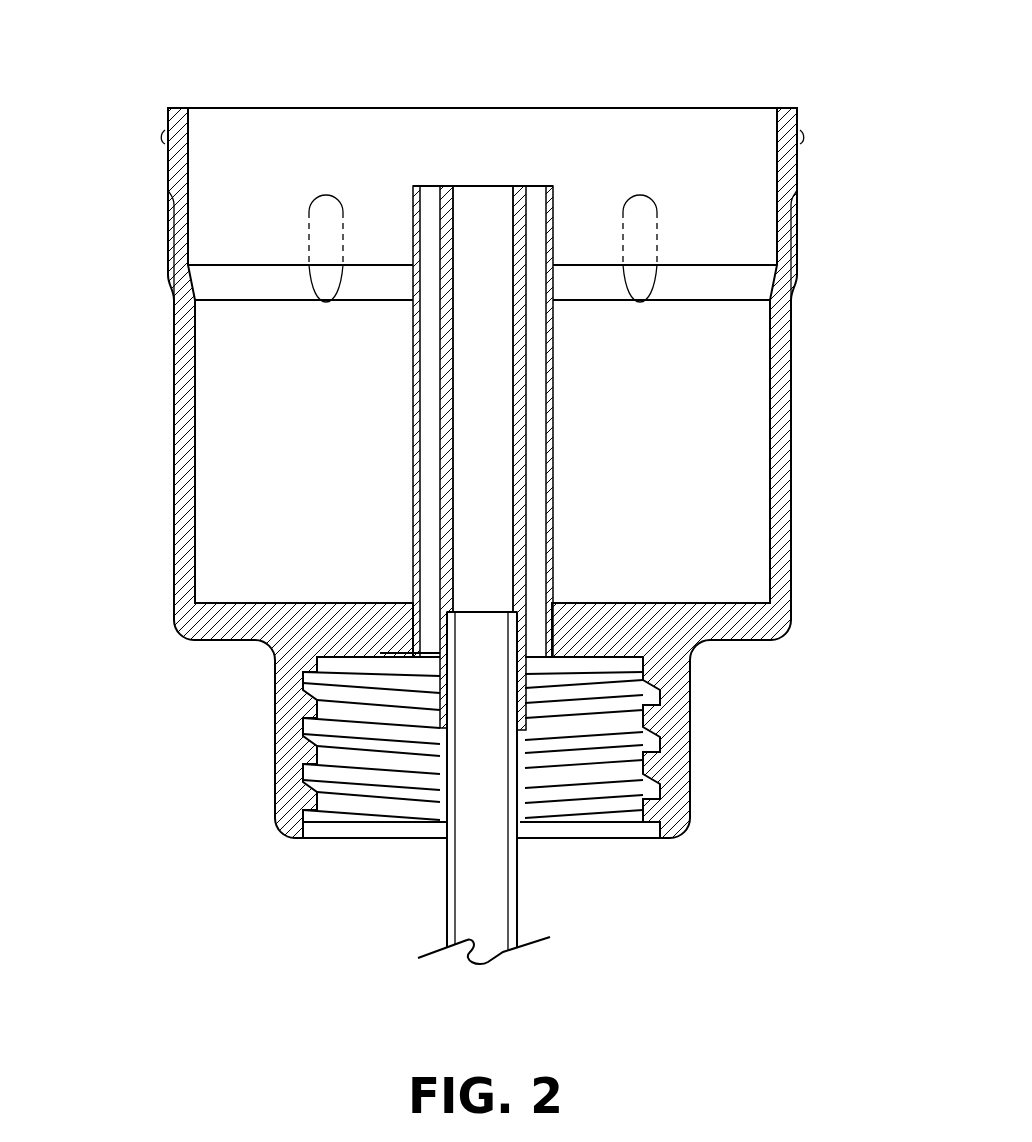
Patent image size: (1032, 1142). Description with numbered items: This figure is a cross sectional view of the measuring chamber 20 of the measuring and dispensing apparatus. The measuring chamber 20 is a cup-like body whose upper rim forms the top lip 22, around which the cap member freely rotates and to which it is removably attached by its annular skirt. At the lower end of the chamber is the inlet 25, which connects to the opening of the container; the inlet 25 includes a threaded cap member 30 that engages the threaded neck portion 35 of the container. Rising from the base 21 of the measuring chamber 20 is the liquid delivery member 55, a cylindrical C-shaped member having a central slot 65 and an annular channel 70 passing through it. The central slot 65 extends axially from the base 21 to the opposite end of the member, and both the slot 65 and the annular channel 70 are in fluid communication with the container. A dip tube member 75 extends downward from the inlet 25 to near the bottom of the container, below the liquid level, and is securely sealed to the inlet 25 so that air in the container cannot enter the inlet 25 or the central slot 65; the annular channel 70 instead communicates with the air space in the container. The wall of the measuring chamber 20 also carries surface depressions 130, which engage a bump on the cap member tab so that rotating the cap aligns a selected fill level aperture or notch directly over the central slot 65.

The measuring chamber 20 is at (174, 452).
The base 21 is at (343, 607).
The top lip 22 is at (321, 108).
The inlet 25 is at (478, 690).
The threaded cap member 30 is at (690, 701).
The threaded neck portion 35 is at (623, 773).
The liquid delivery member 55 is at (413, 430).
The central slot 65 is at (494, 205).
The annular channel 70 is at (432, 205).
The dip tube member 75 is at (445, 880).
The surface depressions 130 is at (847, 237).